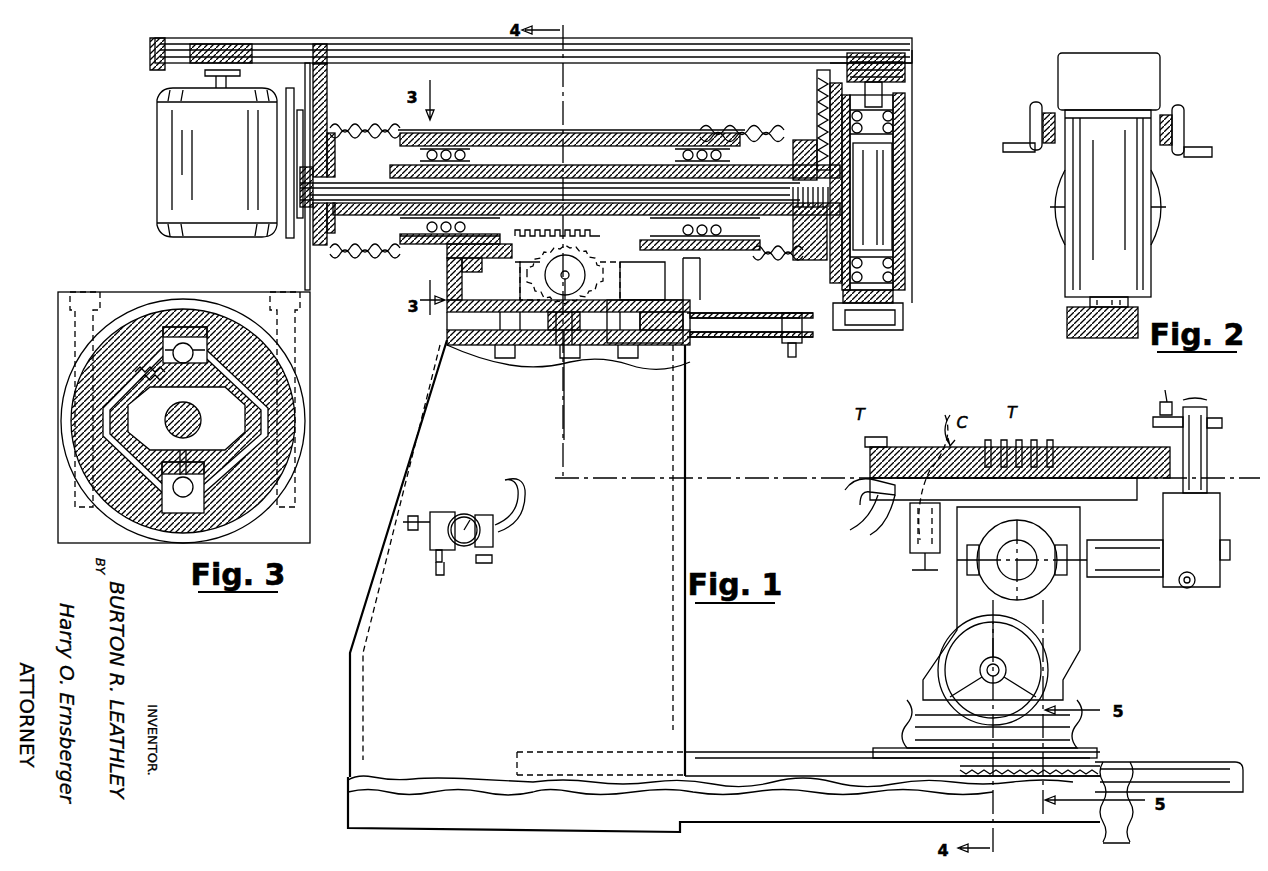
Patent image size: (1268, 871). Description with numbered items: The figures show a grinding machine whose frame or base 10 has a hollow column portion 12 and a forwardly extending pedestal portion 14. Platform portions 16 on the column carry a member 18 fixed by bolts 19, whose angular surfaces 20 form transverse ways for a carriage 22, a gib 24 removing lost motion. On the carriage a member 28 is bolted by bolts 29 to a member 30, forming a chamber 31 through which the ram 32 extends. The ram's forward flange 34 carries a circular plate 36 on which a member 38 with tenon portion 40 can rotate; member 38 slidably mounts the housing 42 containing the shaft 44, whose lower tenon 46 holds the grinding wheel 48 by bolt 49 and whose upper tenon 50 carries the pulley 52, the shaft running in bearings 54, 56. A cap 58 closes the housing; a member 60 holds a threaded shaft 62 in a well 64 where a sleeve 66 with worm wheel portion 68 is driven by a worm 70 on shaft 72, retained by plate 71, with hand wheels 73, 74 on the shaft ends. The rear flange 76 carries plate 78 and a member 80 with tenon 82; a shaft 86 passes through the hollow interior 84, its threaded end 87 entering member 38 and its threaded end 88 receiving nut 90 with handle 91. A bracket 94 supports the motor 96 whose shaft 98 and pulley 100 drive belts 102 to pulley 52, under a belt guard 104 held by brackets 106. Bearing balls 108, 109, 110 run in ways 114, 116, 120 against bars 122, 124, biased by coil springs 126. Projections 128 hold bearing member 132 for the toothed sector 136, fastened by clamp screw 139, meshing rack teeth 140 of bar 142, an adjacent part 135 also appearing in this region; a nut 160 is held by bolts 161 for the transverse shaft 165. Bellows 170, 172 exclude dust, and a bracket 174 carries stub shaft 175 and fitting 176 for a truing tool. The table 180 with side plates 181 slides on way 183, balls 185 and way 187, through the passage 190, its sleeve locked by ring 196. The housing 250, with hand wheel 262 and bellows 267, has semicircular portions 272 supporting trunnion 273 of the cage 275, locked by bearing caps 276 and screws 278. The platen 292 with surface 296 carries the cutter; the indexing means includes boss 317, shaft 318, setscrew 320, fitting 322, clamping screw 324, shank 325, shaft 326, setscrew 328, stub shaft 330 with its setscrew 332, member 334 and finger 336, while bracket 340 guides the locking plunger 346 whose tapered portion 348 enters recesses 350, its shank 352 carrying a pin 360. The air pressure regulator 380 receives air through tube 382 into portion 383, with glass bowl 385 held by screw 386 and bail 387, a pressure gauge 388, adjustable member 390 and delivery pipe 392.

In FIG. 1, the frame or base 10 is at (336, 811).
In FIG. 1, the column portion 12 is at (406, 421).
In FIG. 1, the pedestal portion 14 is at (850, 824).
In FIG. 1, the platform portions 16 is at (500, 348).
In FIG. 1, the member 18 is at (633, 352).
In FIG. 1, the bolts 19 is at (517, 373).
In FIG. 1, the angularly arranged surfaces 20 is at (450, 336).
In FIG. 1, the carriage 22 is at (446, 308).
In FIG. 1, the gib 24 is at (677, 338).
In FIG. 1, the member 28 is at (452, 252).
In FIG. 3, the member 28 is at (120, 510).
In FIG. 3, the bolts 29 is at (70, 292).
In FIG. 1, the member 30 is at (505, 150).
In FIG. 3, the member 30 is at (103, 343).
In FIG. 1, the hollow chamber 31 is at (480, 128).
In FIG. 3, the hollow chamber 31 is at (128, 450).
In FIG. 1, the ram 32 is at (608, 220).
In FIG. 3, the ram 32 is at (215, 377).
In FIG. 1, the flange 34 is at (740, 130).
In FIG. 1, the circular plate 36 is at (795, 148).
In FIG. 1, the circular member 38 is at (910, 212).
In FIG. 2, the circular member 38 is at (1168, 198).
In FIG. 1, the tenon portion 40 is at (902, 185).
In FIG. 1, the housing 42 is at (914, 130).
In FIG. 2, the housing 42 is at (1003, 147).
In FIG. 1, the grinding wheel supporting shaft 44 is at (897, 150).
In FIG. 1, the tenon 46 is at (882, 262).
In FIG. 1, the grinding wheel 48 is at (907, 305).
In FIG. 2, the grinding wheel 48 is at (1067, 318).
In FIG. 1, the bolt 49 is at (907, 320).
In FIG. 1, the tenon 50 is at (907, 76).
In FIG. 1, the double grooved pulley 52 is at (907, 62).
In FIG. 1, the antifriction bearing 54 is at (916, 124).
In FIG. 1, the antifriction bearing 56 is at (902, 275).
In FIG. 1, the cap 58 is at (907, 92).
In FIG. 1, the member 60 is at (828, 78).
In FIG. 1, the threaded shaft 62 is at (883, 58).
In FIG. 1, the well 64 is at (875, 178).
In FIG. 1, the sleeve 66 is at (807, 163).
In FIG. 1, the worm wheel portion 68 is at (807, 120).
In FIG. 1, the worm 70 is at (803, 143).
In FIG. 1, the plate 71 is at (822, 87).
In FIG. 1, the shaft 72 is at (815, 120).
In FIG. 2, the hand wheel 73 is at (1180, 128).
In FIG. 2, the hand wheel 74 is at (1030, 128).
In FIG. 1, the flange 76 is at (365, 126).
In FIG. 1, the circular plate 78 is at (332, 126).
In FIG. 1, the member 80 is at (323, 118).
In FIG. 1, the tenon 82 is at (332, 165).
In FIG. 1, the hollow interior 84 is at (520, 134).
In FIG. 1, the rod or shaft 86 is at (585, 192).
In FIG. 1, the threaded forward end 87 is at (899, 193).
In FIG. 1, the threaded rear extremity 88 is at (300, 186).
In FIG. 1, the securing nut 90 is at (280, 162).
In FIG. 1, the handle 91 is at (302, 236).
In FIG. 1, the bracket 94 is at (288, 228).
In FIG. 1, the motor 96 is at (170, 113).
In FIG. 1, the motor shaft 98 is at (160, 75).
In FIG. 1, the double grooved pulley 100 is at (185, 48).
In FIG. 1, the driving belts 102 is at (445, 42).
In FIG. 1, the belt guard 104 is at (265, 40).
In FIG. 2, the belt guard 104 is at (1068, 68).
In FIG. 1, the brackets 106 is at (333, 42).
In FIG. 1, the group of bearing balls 108 is at (445, 244).
In FIG. 3, the group of bearing balls 108 is at (203, 485).
In FIG. 1, the group of bearing balls 109 is at (730, 242).
In FIG. 1, the group of bearing balls 110 is at (442, 147).
In FIG. 3, the group of bearing balls 110 is at (160, 360).
In FIG. 1, the ways 114 is at (365, 256).
In FIG. 3, the ways 114 is at (207, 497).
In FIG. 1, the ways 116 is at (410, 234).
In FIG. 3, the ways 116 is at (205, 465).
In FIG. 1, the ways 120 is at (462, 150).
In FIG. 3, the ways 120 is at (183, 345).
In FIG. 3, the bar 122 is at (207, 365).
In FIG. 3, the bar 124 is at (143, 372).
In FIG. 3, the coil spring 126 is at (133, 373).
In FIG. 1, the projections 128 is at (514, 281).
In FIG. 1, the bearing member 132 is at (622, 290).
In FIG. 1, the bearing 135 is at (688, 252).
In FIG. 1, the toothed sector 136 is at (565, 274).
In FIG. 1, the clamp screw 139 is at (693, 293).
In FIG. 1, the rack teeth 140 is at (607, 225).
In FIG. 1, the bar 142 is at (580, 192).
In FIG. 1, the nut 160 is at (547, 333).
In FIG. 1, the bolts 161 is at (553, 347).
In FIG. 1, the transversely extending shaft 165 is at (567, 330).
In FIG. 1, the bellows-like member 170 is at (775, 260).
In FIG. 1, the bellows-like member 172 is at (345, 125).
In FIG. 1, the bracket 174 is at (750, 337).
In FIG. 1, the stub shaft 175 is at (767, 343).
In FIG. 1, the fitting 176 is at (803, 346).
In FIG. 1, the table 180 is at (738, 752).
In FIG. 1, the side plates 181 is at (1218, 784).
In FIG. 1, the longitudinal way 183 is at (1003, 782).
In FIG. 1, the bearing balls 185 is at (1093, 770).
In FIG. 1, the way 187 is at (960, 770).
In FIG. 1, the opening or passage 190 is at (688, 740).
In FIG. 1, the securing ring 196 is at (897, 732).
In FIG. 1, the housing 250 is at (943, 617).
In FIG. 1, the hand wheel 262 is at (940, 640).
In FIG. 1, the bellows-like member 267 is at (913, 700).
In FIG. 1, the semicircular portions 272 is at (990, 580).
In FIG. 1, the trunnion 273 is at (1070, 587).
In FIG. 1, the cage 275 is at (1030, 572).
In FIG. 1, the bearing caps 276 is at (1035, 520).
In FIG. 1, the screws 278 is at (1065, 545).
In FIG. 1, the platen 292 is at (1117, 492).
In FIG. 1, the upper surface 296 is at (1087, 477).
In FIG. 1, the boss 317 is at (1100, 560).
In FIG. 1, the shaft 318 is at (1097, 562).
In FIG. 1, the setscrew 320 is at (1025, 565).
In FIG. 1, the T-shaped fitting 322 is at (1208, 588).
In FIG. 1, the clamping screw 324 is at (1190, 590).
In FIG. 1, the shank 325 is at (1205, 470).
In FIG. 1, the shaft 326 is at (1205, 452).
In FIG. 1, the setscrew 328 is at (1215, 515).
In FIG. 1, the stub shaft 330 is at (1222, 424).
In FIG. 1, the cap 332 is at (1200, 406).
In FIG. 1, the member 334 is at (1165, 402).
In FIG. 1, the flexible finger 336 is at (1165, 418).
In FIG. 1, the bracket 340 is at (940, 540).
In FIG. 1, the locking plunger 346 is at (910, 527).
In FIG. 1, the frusto-conical portion 348 is at (929, 467).
In FIG. 1, the recesses 350 is at (930, 442).
In FIG. 1, the shank 352 is at (925, 572).
In FIG. 1, the pin 360 is at (928, 560).
In FIG. 1, the air pressure regulator 380 is at (472, 568).
In FIG. 1, the air supply tube 382 is at (392, 525).
In FIG. 1, the regulator portion 383 is at (433, 515).
In FIG. 1, the glass bowl 385 is at (435, 552).
In FIG. 1, the screw 386 is at (438, 575).
In FIG. 1, the bail 387 is at (438, 555).
In FIG. 1, the pressure gauge 388 is at (468, 514).
In FIG. 1, the adjustable member 390 is at (497, 558).
In FIG. 1, the pipe 392 is at (515, 500).